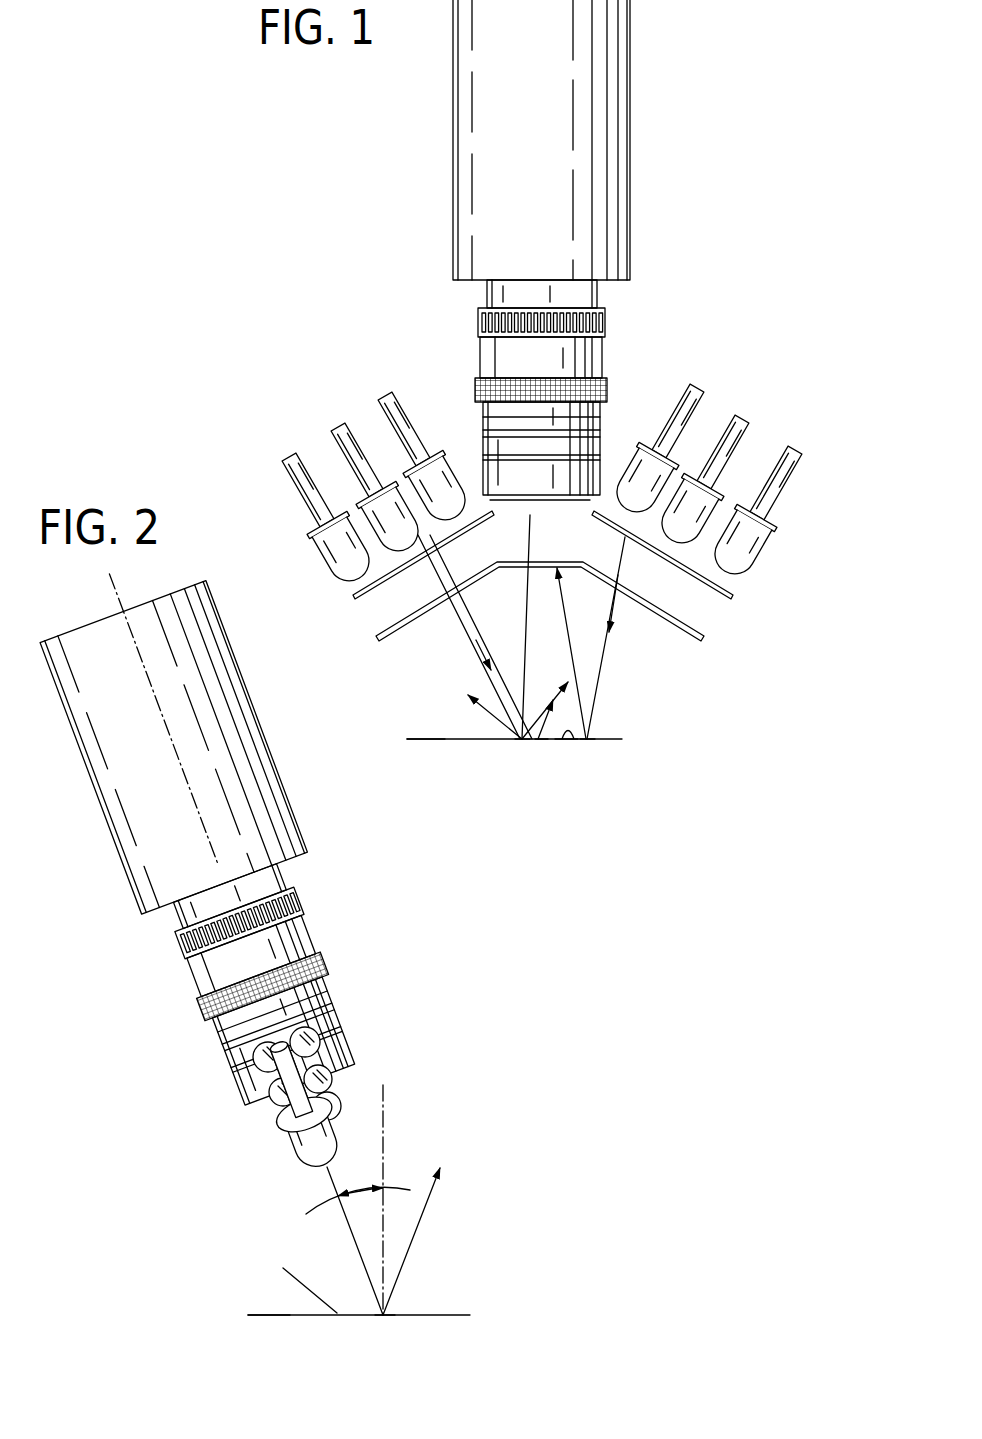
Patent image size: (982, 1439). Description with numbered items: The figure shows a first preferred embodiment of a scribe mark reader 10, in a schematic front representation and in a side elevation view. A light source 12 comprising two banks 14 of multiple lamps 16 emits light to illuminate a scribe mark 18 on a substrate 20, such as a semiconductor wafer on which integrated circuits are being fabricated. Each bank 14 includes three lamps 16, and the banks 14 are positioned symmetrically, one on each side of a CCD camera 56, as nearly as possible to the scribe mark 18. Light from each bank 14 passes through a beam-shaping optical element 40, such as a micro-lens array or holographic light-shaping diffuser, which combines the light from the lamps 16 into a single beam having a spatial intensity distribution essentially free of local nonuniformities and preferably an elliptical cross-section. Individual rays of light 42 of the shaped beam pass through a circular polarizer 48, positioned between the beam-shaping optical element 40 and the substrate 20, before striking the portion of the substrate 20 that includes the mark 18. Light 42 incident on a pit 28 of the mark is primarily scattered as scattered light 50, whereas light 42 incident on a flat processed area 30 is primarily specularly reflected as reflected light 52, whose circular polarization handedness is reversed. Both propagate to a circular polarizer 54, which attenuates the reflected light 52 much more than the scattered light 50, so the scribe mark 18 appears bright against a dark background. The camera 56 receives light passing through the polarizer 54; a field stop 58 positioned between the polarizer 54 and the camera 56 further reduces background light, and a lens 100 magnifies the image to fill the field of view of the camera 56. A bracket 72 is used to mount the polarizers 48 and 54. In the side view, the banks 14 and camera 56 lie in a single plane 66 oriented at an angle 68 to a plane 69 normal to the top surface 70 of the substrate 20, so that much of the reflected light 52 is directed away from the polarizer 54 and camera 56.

In FIG. 1, the scribe mark reader 10 is at (526, 250).
In FIG. 2, the scribe mark reader 10 is at (220, 844).
In FIG. 1, the light source 12 is at (546, 474).
In FIG. 2, the light source 12 is at (260, 1116).
In FIG. 1, the bank 14 is at (546, 500).
In FIG. 2, the bank 14 is at (260, 1101).
In FIG. 1, the lamp 16 is at (283, 466).
In FIG. 2, the lamp 16 is at (297, 1140).
In FIG. 1, the scribe mark 18 is at (576, 739).
In FIG. 2, the scribe mark 18 is at (403, 1313).
In FIG. 1, the substrate 20 is at (513, 758).
In FIG. 2, the substrate 20 is at (366, 1291).
In FIG. 1, the pit 28 is at (522, 741).
In FIG. 1, the processed area 30 is at (539, 740).
In FIG. 1, the beam-shaping optical element 40 is at (353, 597).
In FIG. 1, the rays of light 42 is at (468, 650).
In FIG. 2, the rays of light 42 is at (357, 1244).
In FIG. 1, the circular polarizer 48 is at (380, 637).
In FIG. 1, the scattered light 50 is at (527, 592).
In FIG. 1, the reflected light 52 is at (565, 593).
In FIG. 2, the reflected light 52 is at (427, 1217).
In FIG. 1, the circular polarizer 54 is at (533, 599).
In FIG. 1, the CCD camera 56 is at (630, 162).
In FIG. 2, the CCD camera 56 is at (260, 727).
In FIG. 1, the field stop 58 is at (545, 500).
In FIG. 2, the plane 66 is at (127, 603).
In FIG. 2, the angle 68 is at (370, 1187).
In FIG. 2, the plane normal to top surface 69 is at (387, 1100).
In FIG. 1, the top surface 70 is at (432, 738).
In FIG. 2, the top surface 70 is at (277, 1313).
In FIG. 1, the bracket 72 is at (533, 598).
In FIG. 1, the lens 100 is at (604, 352).
In FIG. 2, the lens 100 is at (307, 932).